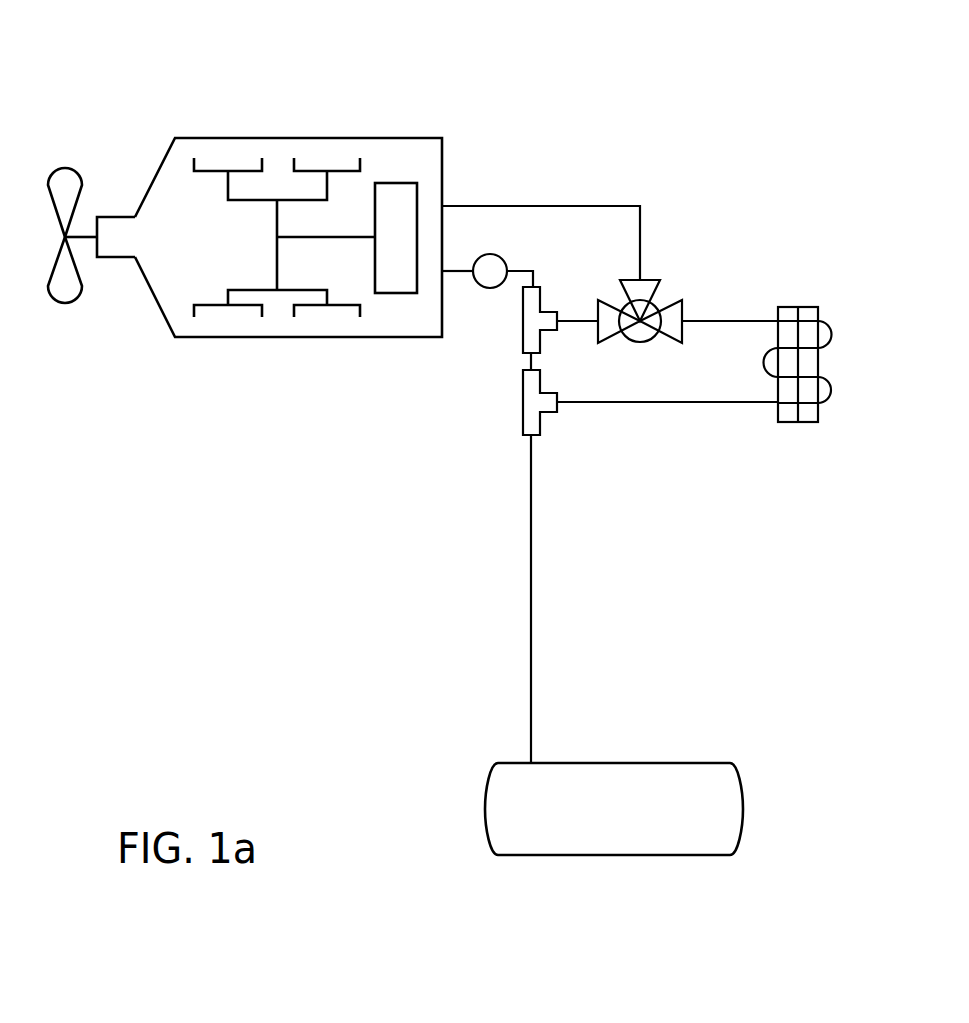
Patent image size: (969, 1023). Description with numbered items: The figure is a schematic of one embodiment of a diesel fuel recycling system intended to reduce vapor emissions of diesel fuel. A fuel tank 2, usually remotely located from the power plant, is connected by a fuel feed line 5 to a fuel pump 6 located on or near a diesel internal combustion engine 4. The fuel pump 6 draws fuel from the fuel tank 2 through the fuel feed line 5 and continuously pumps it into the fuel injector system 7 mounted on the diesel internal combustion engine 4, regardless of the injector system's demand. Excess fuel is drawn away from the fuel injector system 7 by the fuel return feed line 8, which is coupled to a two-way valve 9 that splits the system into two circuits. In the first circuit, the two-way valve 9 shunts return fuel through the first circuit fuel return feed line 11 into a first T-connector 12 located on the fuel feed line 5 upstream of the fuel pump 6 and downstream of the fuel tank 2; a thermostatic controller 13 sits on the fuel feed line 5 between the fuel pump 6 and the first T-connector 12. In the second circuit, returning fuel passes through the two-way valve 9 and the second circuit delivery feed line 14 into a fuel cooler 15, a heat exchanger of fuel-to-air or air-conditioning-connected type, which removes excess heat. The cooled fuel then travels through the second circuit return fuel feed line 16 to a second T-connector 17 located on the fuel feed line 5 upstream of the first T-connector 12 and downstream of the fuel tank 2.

The fuel tank 2 is at (743, 807).
The diesel internal combustion engine 4 is at (392, 320).
The fuel feed line 5 is at (530, 582).
The fuel pump 6 is at (385, 137).
The fuel injector system 7 is at (165, 317).
The fuel return feed line 8 is at (482, 205).
The two-way valve 9 is at (665, 302).
The first circuit fuel return feed line 11 is at (567, 318).
The first T-connector 12 is at (522, 337).
The thermostatic controller 13 is at (488, 288).
The second circuit delivery feed line 14 is at (717, 320).
The fuel cooler 15 is at (805, 395).
The second circuit return fuel feed line 16 is at (582, 402).
The second T-connector 17 is at (522, 415).